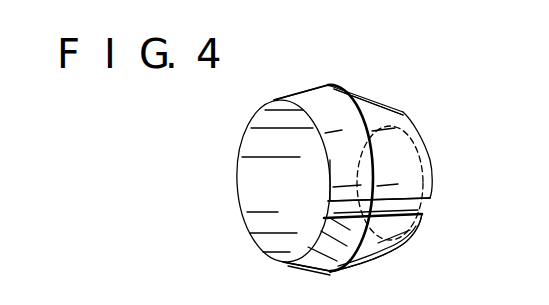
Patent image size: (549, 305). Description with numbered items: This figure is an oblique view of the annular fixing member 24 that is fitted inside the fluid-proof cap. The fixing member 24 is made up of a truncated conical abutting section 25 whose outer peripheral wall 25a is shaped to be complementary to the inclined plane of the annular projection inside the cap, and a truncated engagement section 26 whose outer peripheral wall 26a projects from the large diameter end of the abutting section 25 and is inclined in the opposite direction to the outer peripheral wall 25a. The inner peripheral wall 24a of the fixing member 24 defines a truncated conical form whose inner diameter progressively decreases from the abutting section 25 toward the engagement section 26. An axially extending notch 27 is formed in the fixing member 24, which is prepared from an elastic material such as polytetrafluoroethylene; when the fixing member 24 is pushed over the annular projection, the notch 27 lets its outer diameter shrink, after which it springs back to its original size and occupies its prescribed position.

The annular fixing member 24 is at (357, 85).
The inner peripheral wall 24a is at (267, 194).
The truncated conical abutting section 25 is at (310, 258).
The outer peripheral wall of abutting section 25a is at (323, 105).
The truncated engagement section 26 is at (382, 247).
The outer peripheral wall of engagement section 26a is at (385, 110).
The axially extending notch 27 is at (430, 208).